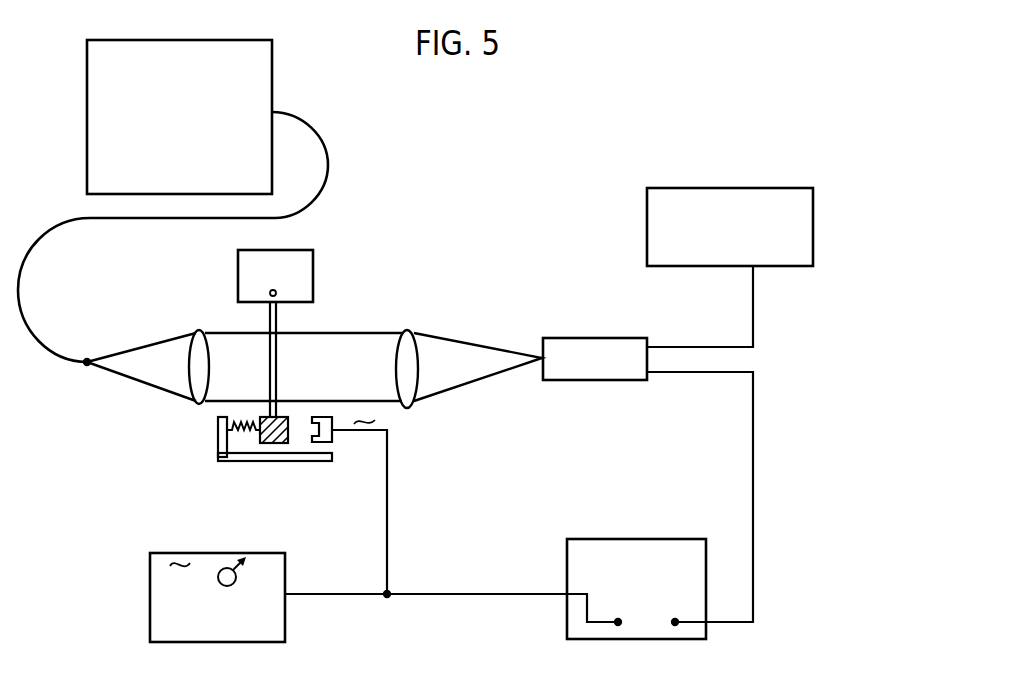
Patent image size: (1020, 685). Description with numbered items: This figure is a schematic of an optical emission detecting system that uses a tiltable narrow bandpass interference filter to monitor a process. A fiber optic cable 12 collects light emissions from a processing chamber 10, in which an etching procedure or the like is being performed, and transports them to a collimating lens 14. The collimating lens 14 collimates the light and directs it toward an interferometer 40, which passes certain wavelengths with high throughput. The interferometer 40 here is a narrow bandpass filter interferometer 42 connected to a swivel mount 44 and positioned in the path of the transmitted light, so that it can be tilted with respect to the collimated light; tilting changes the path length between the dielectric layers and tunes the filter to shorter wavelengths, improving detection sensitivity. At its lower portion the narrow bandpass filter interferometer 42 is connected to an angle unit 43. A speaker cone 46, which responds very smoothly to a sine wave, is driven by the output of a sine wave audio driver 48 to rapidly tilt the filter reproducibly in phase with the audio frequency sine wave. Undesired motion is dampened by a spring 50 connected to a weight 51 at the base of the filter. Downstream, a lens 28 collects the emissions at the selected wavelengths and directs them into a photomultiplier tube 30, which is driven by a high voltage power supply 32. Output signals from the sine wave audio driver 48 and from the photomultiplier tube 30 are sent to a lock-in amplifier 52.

The processing chamber 10 is at (274, 72).
The fiber optic cable 12 is at (326, 150).
The collimating lens 14 is at (196, 341).
The lens 28 is at (418, 345).
The photomultiplier tube 30 is at (630, 338).
The high voltage power supply 32 is at (770, 188).
The interferometer 40 is at (398, 225).
The narrow bandpass filter interferometer 42 is at (278, 319).
The angle unit 43 is at (336, 505).
The swivel mount 44 is at (313, 266).
The speaker cone 46 is at (333, 438).
The sine wave audio driver 48 is at (295, 567).
The spring 50 is at (240, 432).
The weight 51 is at (279, 444).
The lock-in amplifier 52 is at (650, 539).